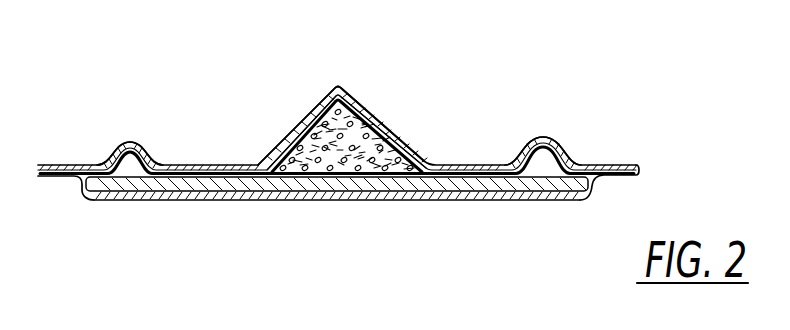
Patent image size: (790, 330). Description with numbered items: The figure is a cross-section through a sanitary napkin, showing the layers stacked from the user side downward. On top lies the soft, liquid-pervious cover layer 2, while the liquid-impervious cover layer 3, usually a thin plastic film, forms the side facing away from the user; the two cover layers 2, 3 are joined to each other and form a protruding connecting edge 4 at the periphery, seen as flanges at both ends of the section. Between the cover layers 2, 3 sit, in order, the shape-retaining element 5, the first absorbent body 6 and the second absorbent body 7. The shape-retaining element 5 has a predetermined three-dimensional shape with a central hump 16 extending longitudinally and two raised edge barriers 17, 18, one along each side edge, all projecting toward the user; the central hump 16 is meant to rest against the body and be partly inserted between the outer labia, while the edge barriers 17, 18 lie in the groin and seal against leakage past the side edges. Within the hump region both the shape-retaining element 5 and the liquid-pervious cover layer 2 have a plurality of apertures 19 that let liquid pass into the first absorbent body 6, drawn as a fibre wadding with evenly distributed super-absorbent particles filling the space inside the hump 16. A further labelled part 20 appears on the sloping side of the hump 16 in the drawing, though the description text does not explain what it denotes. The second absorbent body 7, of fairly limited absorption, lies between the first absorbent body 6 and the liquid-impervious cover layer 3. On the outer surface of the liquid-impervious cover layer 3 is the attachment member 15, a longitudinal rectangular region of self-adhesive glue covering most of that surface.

The liquid-pervious cover layer 2 is at (460, 167).
The liquid-impervious cover layer 3 is at (612, 178).
The protruding connecting edge 4 is at (63, 164).
The shape-retaining element 5 is at (206, 172).
The first absorbent body 6 is at (304, 153).
The second absorbent body 7 is at (399, 179).
The attachment member 15 is at (191, 200).
The central hump 16 is at (337, 87).
The raised edge barrier 17 is at (129, 141).
The raised edge barrier 18 is at (543, 136).
The apertures 19 is at (376, 127).
The outer wall 20 is at (288, 130).